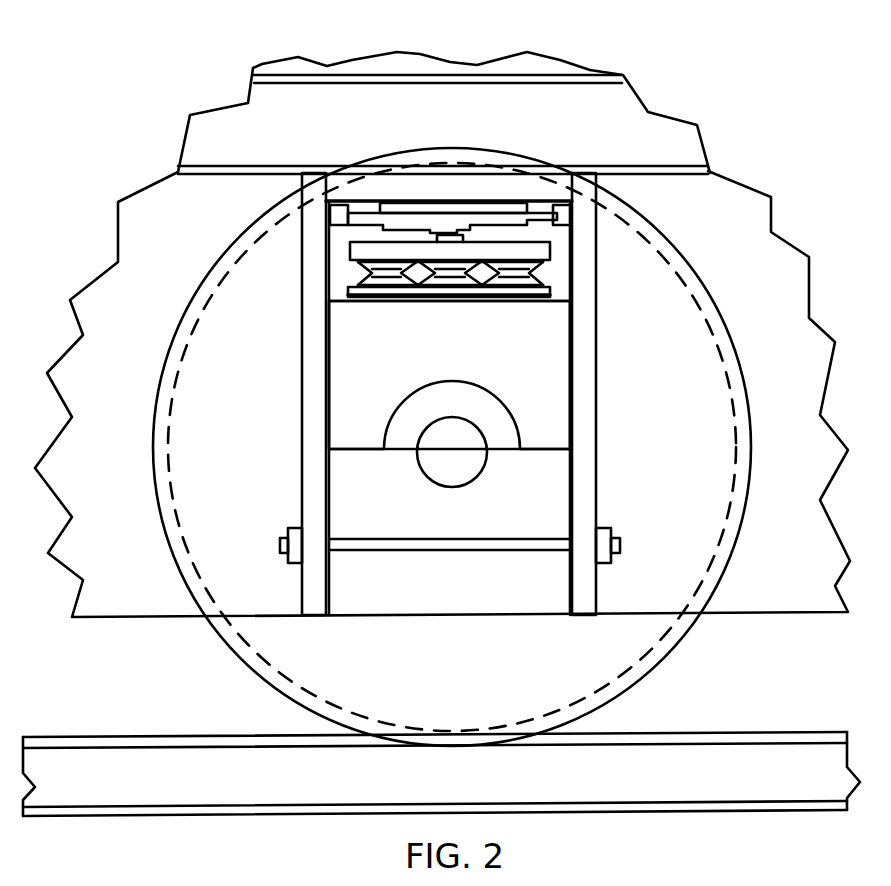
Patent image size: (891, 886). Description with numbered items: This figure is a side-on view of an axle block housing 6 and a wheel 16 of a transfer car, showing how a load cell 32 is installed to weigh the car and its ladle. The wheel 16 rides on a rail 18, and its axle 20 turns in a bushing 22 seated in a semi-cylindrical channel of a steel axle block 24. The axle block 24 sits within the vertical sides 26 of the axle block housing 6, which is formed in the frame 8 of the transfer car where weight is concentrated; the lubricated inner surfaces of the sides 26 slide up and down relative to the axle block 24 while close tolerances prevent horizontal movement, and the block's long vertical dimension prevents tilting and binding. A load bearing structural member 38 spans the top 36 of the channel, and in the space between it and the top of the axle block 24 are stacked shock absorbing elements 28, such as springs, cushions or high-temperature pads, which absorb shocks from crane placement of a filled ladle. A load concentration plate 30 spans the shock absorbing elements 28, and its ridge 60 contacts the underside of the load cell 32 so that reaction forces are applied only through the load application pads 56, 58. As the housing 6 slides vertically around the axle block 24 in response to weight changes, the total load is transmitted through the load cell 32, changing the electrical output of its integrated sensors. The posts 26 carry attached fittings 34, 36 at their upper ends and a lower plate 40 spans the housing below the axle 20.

The axle block housing 6 is at (433, 359).
The frame 8 is at (791, 611).
The wheel 16 is at (240, 660).
The rail 18 is at (680, 732).
The axle 20 is at (432, 479).
The bushing 22 is at (427, 388).
The axle block 24 is at (372, 357).
The sides of axle block housing 26 is at (302, 403).
The shock absorbing element 28 is at (348, 278).
The load concentration plate 30 is at (550, 250).
The load cell 32 is at (463, 207).
The left mounting block 34 is at (300, 218).
The top plate 36 is at (598, 178).
The load bearing structural member 38 is at (528, 68).
The lower plate 40 is at (370, 551).
The load application pad 56 is at (405, 173).
The load application pad 58 is at (440, 226).
The ridge 60 is at (457, 235).